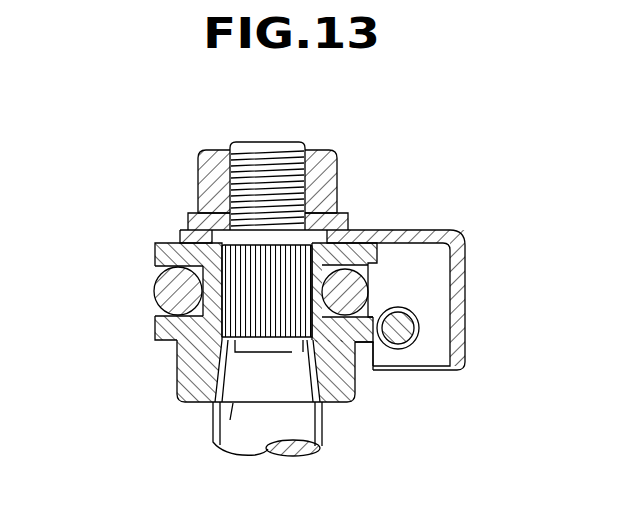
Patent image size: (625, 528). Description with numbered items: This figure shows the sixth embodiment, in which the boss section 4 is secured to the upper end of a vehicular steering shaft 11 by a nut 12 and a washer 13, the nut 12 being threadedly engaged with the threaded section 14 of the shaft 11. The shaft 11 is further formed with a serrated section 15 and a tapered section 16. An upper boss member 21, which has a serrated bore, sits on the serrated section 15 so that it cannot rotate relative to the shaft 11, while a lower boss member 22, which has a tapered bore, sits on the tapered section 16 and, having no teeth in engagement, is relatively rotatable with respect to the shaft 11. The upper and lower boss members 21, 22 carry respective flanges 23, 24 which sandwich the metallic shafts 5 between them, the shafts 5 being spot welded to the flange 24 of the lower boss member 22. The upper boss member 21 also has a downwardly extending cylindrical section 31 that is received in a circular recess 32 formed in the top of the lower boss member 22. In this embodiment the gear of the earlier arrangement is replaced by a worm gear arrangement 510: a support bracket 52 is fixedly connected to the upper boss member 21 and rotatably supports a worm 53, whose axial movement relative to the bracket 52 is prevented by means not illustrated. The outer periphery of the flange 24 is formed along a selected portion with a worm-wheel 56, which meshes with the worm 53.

The boss section 4 is at (68, 275).
The metallic shafts 5 is at (153, 280).
The vehicular steering shaft 11 is at (230, 447).
The nut 12 is at (213, 155).
The washer 13 is at (188, 213).
The threaded section 14 is at (260, 157).
The serrated section 15 is at (322, 360).
The tapered section 16 is at (245, 390).
The upper boss member 21 is at (157, 297).
The lower boss member 22 is at (177, 372).
The flange 23 is at (155, 243).
The flange 24 is at (155, 327).
The cylindrical section 31 is at (180, 378).
The circular recess 32 is at (220, 393).
The support bracket 52 is at (415, 230).
The worm 53 is at (400, 352).
The worm-wheel 56 is at (363, 347).
The worm gear arrangement 510 is at (487, 302).